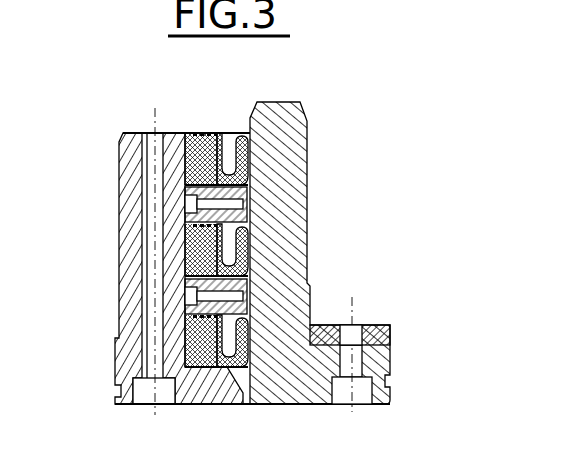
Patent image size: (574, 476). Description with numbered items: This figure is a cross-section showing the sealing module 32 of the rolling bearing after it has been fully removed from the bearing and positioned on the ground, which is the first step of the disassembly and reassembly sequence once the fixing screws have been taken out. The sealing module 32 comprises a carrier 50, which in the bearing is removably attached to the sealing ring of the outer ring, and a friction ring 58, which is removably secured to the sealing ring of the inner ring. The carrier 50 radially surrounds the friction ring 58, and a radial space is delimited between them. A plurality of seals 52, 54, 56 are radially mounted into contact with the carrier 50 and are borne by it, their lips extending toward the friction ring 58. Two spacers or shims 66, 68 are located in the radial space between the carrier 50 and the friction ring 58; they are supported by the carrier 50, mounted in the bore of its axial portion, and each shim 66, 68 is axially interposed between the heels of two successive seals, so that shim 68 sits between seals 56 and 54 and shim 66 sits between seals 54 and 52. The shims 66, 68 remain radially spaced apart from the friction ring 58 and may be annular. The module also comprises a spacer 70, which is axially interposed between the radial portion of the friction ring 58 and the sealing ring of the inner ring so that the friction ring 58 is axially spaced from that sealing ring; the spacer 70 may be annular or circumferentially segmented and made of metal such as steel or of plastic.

The sealing module 32 is at (247, 252).
The carrier 50 is at (196, 398).
The seal 52 is at (193, 338).
The seal 54 is at (193, 247).
The seal 56 is at (193, 163).
The friction ring 58 is at (304, 212).
The shim 66 is at (249, 277).
The shim 68 is at (249, 187).
The spacer 70 is at (392, 332).